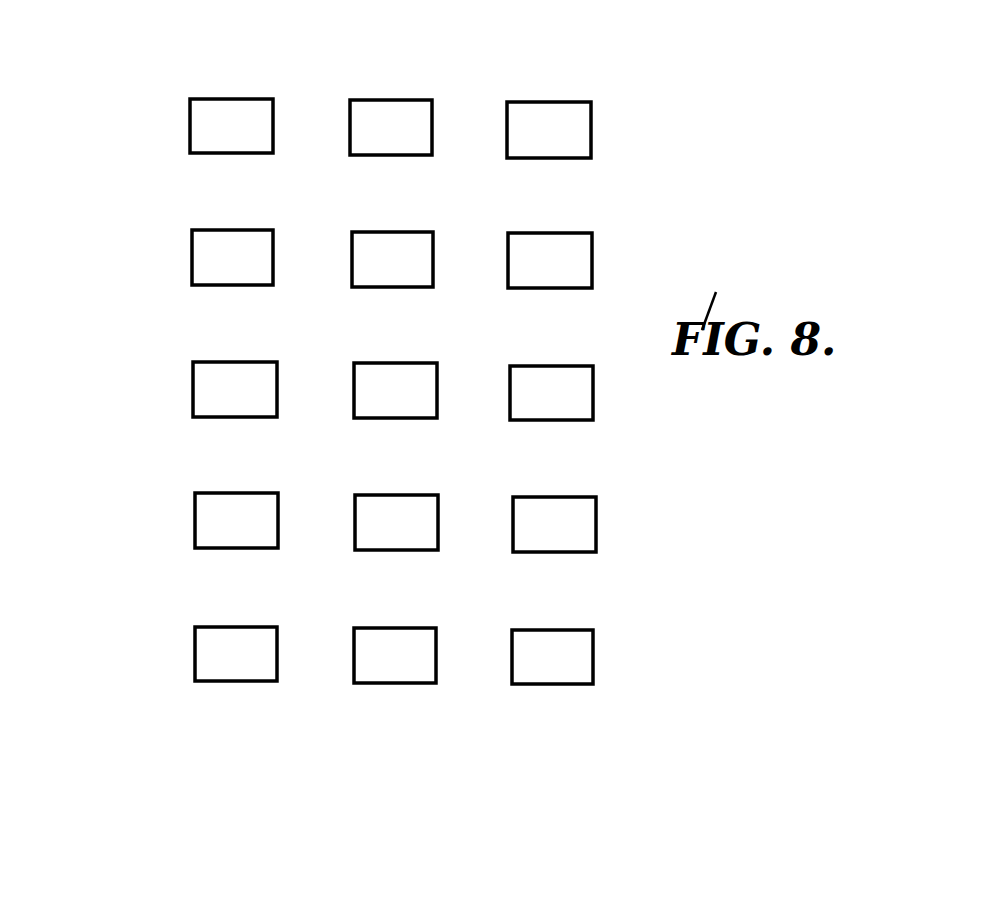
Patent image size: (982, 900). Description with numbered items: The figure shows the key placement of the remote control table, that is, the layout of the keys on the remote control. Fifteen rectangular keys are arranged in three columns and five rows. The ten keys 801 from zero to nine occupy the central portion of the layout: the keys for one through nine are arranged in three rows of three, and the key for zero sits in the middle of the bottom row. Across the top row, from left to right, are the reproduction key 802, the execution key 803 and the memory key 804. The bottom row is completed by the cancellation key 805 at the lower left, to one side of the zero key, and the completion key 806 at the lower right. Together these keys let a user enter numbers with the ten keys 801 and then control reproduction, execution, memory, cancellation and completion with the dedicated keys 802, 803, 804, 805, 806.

The ten keys 801 is at (193, 383).
The reproduction key 802 is at (225, 99).
The execution key 803 is at (388, 100).
The memory key 804 is at (553, 102).
The cancellation key 805 is at (223, 682).
The completion key 806 is at (560, 683).